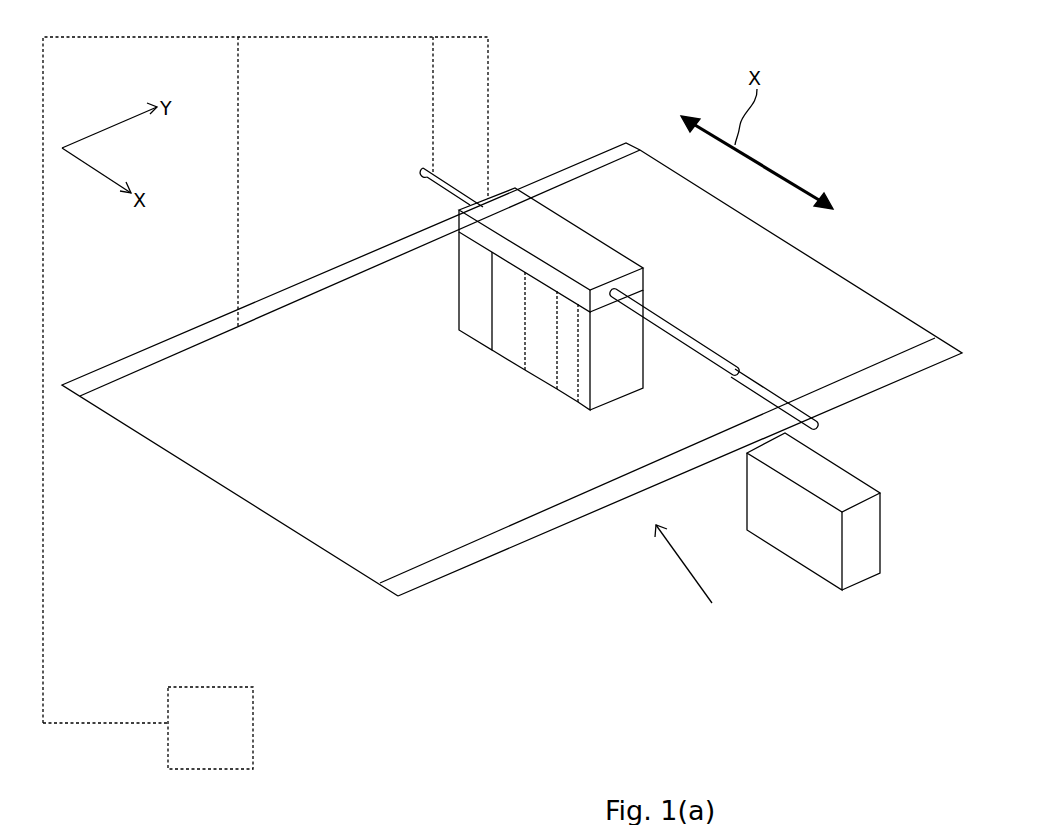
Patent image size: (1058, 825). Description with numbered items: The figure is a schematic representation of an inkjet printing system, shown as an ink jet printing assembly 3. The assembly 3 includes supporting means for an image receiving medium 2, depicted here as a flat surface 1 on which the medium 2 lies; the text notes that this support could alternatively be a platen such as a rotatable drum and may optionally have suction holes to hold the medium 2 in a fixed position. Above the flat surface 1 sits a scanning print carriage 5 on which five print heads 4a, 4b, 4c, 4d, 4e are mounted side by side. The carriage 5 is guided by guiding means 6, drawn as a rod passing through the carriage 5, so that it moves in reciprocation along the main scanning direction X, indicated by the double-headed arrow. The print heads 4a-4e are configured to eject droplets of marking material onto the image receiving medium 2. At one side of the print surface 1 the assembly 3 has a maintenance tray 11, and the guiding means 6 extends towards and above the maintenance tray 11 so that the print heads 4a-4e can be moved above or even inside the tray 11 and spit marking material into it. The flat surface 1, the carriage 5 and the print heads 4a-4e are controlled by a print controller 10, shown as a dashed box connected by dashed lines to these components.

The flat surface 1 is at (409, 580).
The image receiving medium 2 is at (343, 547).
The ink jet printing assembly 3 is at (689, 578).
The print head 4a is at (482, 305).
The print head 4b is at (510, 345).
The print head 4c is at (532, 368).
The print head 4d is at (566, 390).
The print head 4e is at (612, 367).
The scanning print carriage 5 is at (503, 203).
The guiding means 6 is at (442, 183).
The print controller 10 is at (148, 728).
The maintenance tray 11 is at (868, 580).